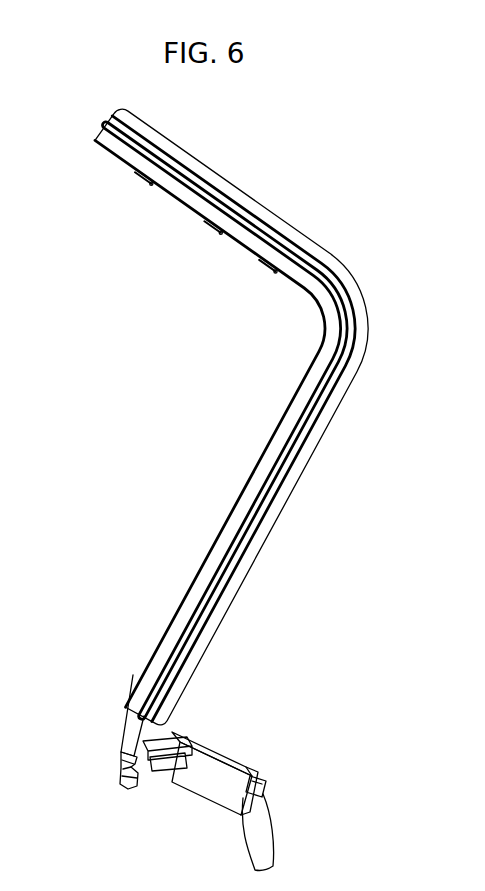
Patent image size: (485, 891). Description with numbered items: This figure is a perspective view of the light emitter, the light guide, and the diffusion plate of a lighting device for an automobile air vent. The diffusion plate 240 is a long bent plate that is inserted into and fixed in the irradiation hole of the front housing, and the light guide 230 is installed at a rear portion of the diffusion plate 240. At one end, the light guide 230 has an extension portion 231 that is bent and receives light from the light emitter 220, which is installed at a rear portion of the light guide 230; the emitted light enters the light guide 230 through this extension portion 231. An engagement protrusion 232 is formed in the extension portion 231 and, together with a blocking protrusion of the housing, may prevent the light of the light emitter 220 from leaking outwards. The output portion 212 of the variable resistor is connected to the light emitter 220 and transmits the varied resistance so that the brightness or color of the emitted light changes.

The diffusion plate 240 is at (242, 196).
The light guide 230 is at (140, 740).
The engagement protrusion 232 is at (122, 752).
The extension portion 231 is at (167, 762).
The light emitter 220 is at (217, 765).
The output portion 212 is at (265, 847).